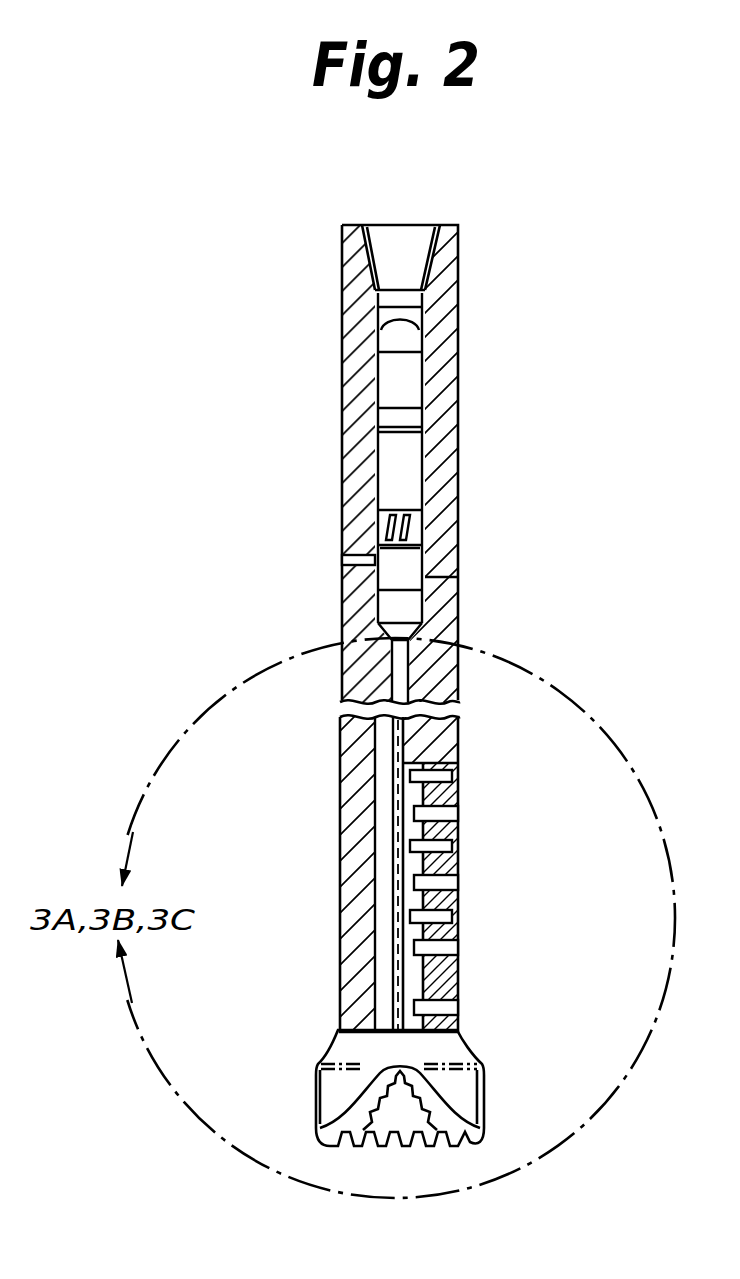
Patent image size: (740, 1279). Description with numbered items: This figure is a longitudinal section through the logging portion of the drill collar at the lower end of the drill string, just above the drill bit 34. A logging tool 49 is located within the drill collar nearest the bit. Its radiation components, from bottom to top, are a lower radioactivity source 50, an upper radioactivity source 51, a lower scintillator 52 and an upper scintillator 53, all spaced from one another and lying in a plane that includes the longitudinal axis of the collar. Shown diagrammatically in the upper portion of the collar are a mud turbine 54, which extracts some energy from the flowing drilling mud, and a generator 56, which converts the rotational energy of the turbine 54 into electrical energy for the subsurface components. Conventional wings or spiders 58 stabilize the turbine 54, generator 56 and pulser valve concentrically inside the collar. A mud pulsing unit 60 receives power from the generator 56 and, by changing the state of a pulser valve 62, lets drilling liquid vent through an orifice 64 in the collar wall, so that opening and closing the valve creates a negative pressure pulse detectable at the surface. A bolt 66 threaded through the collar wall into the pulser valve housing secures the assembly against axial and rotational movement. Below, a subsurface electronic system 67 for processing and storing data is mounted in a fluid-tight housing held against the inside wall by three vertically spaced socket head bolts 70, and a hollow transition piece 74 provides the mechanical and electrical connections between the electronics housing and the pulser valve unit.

The drill bit 34 is at (486, 1080).
The logging tool 49 is at (388, 734).
The lower radioactivity source 50 is at (464, 1007).
The upper radioactivity source 51 is at (464, 948).
The lower scintillator 52 is at (464, 883).
The upper scintillator 53 is at (464, 816).
The mud turbine 54 is at (407, 327).
The generator 56 is at (400, 384).
The wings or spiders 58 is at (376, 427).
The mud pulsing unit 60 is at (410, 538).
The pulser valve 62 is at (400, 567).
The orifice 64 is at (423, 580).
The bolt 66 is at (372, 560).
The subsurface electronic system 67 is at (396, 800).
The socket head bolts 70 is at (460, 771).
The hollow transition piece 74 is at (420, 675).